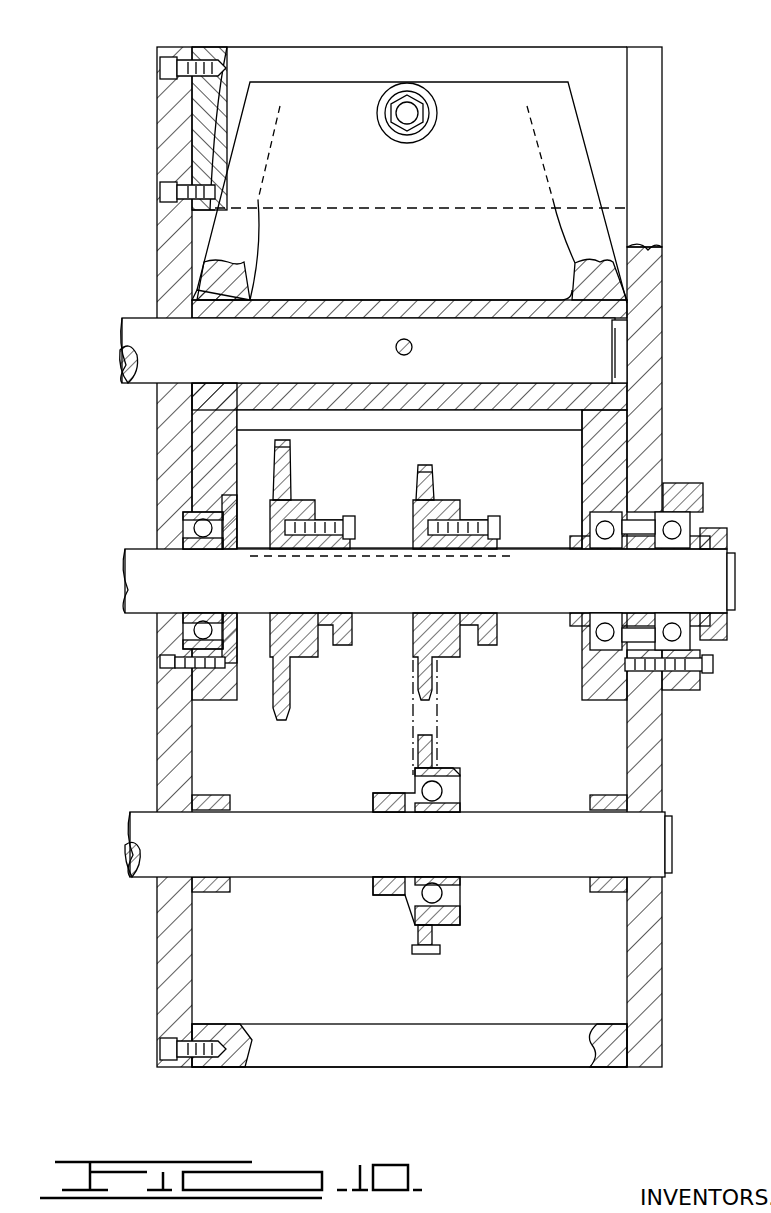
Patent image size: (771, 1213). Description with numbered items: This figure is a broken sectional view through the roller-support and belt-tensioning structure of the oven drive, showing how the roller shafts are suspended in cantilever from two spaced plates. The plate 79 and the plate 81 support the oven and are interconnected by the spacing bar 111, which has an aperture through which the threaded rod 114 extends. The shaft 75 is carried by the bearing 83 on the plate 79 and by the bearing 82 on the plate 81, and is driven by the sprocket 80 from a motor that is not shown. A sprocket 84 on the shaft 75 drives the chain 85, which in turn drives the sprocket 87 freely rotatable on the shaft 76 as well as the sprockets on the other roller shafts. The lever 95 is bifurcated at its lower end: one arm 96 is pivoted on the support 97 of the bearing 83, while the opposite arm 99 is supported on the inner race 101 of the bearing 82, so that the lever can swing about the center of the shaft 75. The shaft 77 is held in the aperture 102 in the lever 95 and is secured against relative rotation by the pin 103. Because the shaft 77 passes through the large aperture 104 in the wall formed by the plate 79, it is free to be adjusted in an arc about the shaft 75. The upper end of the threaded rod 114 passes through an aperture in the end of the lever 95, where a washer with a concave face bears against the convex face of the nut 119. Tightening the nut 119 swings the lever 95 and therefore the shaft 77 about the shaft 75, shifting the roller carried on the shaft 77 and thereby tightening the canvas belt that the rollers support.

The spacing bar 111 is at (258, 57).
The threaded rod 114 is at (407, 113).
The nut 119 is at (428, 112).
The lever 95 is at (583, 185).
The plate 79 is at (160, 207).
The large aperture 104 is at (135, 318).
The pin 103 is at (407, 340).
The aperture 102 is at (640, 325).
The plate 81 is at (648, 352).
The shaft 77 is at (158, 367).
The arm 96 is at (205, 457).
The bearing 83 is at (195, 498).
The sprocket 84 is at (428, 505).
The arm 99 is at (586, 472).
The bearing 82 is at (672, 530).
The shaft 75 is at (398, 600).
The sprocket 80 is at (300, 650).
The support 97 is at (185, 668).
The inner race 101 is at (590, 648).
The shaft 76 is at (287, 868).
The sprocket 87 is at (440, 935).
The chain 85 is at (415, 950).